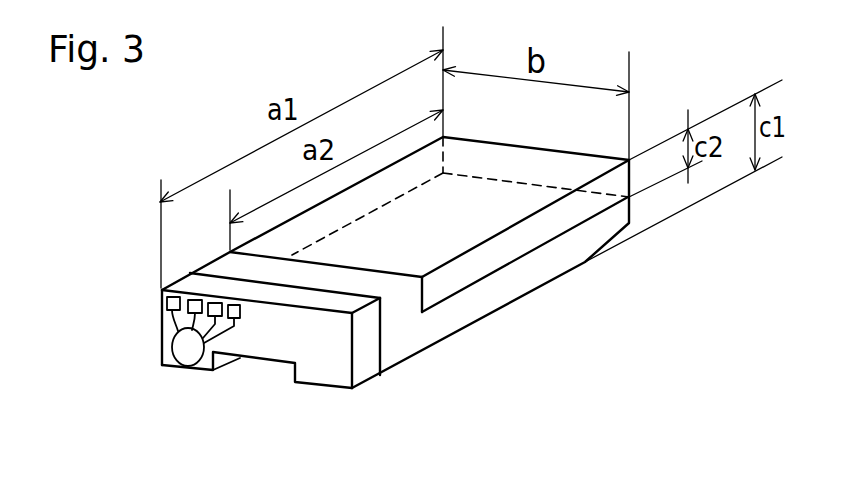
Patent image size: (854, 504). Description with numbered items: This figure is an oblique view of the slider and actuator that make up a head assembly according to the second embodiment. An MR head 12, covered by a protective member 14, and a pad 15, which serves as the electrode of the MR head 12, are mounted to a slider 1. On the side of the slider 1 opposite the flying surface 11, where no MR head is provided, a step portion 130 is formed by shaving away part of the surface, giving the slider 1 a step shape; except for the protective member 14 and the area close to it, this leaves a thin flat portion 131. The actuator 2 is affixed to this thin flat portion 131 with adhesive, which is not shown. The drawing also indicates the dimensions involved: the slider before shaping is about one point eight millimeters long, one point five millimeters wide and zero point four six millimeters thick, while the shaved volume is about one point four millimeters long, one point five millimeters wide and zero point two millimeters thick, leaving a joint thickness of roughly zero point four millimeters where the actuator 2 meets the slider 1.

The slider 1 is at (520, 280).
The actuator 2 is at (520, 238).
The flying surface 11 is at (323, 389).
The MR head 12 is at (177, 347).
The protective member 14 is at (363, 365).
The pad 15 is at (167, 303).
The step portion 130 is at (421, 317).
The thin flat portion 131 is at (462, 293).